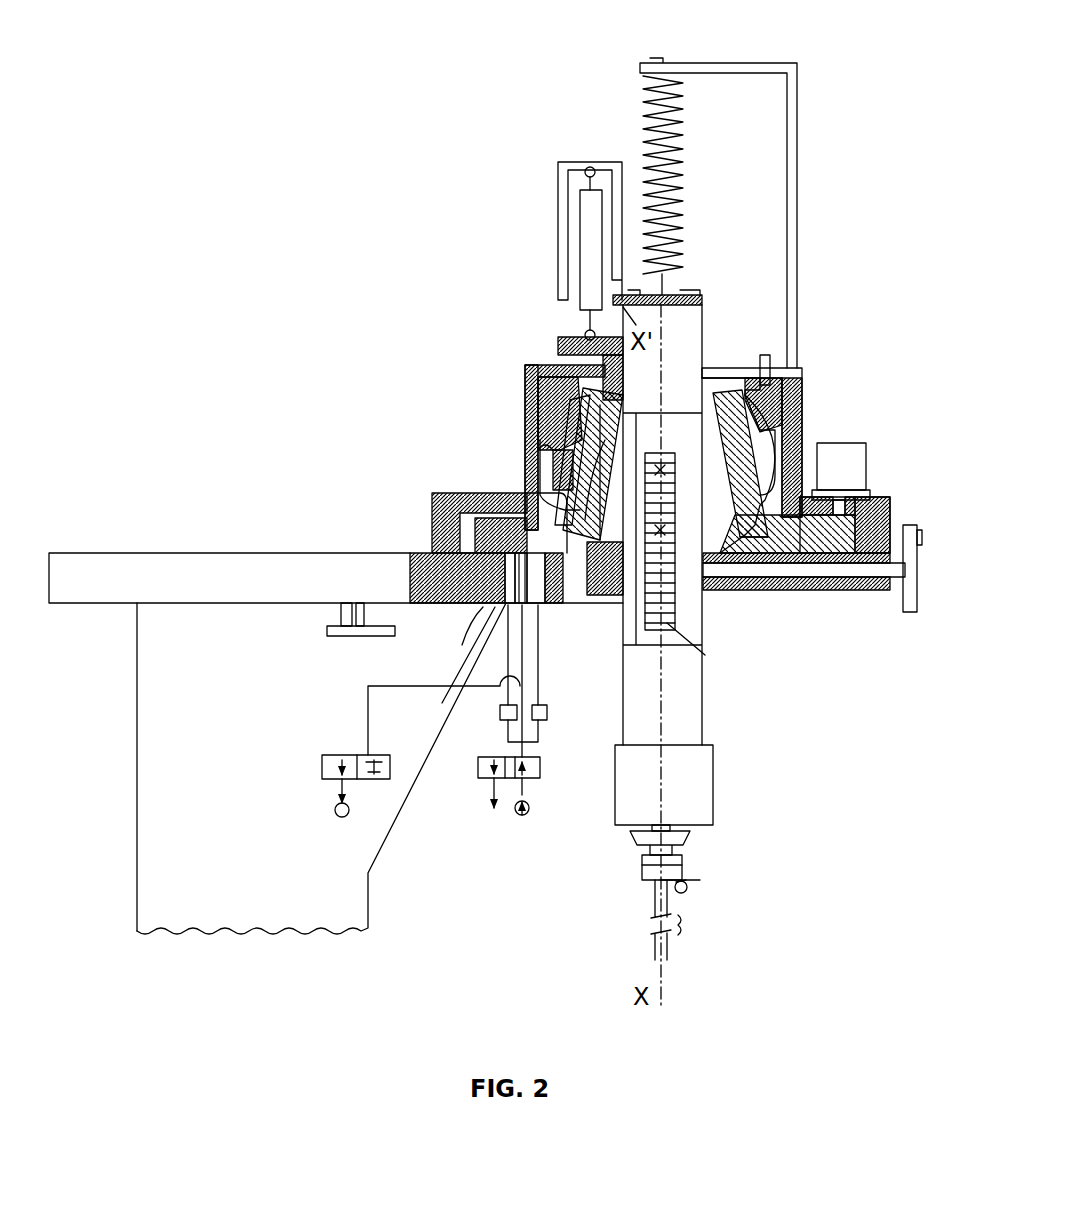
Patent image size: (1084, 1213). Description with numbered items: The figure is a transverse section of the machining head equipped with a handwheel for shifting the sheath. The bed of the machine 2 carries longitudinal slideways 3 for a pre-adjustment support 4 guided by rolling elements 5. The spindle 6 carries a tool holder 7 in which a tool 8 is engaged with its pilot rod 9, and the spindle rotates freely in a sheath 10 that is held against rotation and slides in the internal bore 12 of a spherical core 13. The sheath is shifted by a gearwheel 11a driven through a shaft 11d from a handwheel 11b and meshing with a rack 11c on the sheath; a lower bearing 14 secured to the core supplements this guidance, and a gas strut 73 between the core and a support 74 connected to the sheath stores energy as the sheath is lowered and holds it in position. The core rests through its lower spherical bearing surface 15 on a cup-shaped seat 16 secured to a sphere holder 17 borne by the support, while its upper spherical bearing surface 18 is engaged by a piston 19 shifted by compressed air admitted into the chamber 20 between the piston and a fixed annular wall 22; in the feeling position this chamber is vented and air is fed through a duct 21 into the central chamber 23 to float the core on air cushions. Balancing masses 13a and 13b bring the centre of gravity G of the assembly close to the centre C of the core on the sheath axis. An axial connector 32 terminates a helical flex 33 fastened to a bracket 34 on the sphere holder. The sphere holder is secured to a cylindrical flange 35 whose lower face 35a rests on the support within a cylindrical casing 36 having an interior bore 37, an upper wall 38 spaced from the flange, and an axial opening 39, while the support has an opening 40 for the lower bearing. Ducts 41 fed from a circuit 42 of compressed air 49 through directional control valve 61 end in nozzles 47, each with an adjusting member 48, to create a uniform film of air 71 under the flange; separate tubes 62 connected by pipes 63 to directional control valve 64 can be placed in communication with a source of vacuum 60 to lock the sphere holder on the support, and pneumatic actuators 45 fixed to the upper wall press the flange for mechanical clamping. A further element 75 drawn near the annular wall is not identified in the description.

The bed of the machine 2 is at (160, 815).
The longitudinal slideways 3 is at (215, 605).
The pre-adjustment support 4 is at (112, 565).
The rolling elements 5 is at (375, 625).
The spindle 6 is at (665, 823).
The tool holder 7 is at (680, 842).
The tool 8 is at (687, 890).
The pilot rod 9 is at (655, 945).
The sheath 10 is at (690, 720).
The gearwheel 11a is at (700, 590).
The handwheel 11b is at (912, 600).
The rack 11c is at (690, 632).
The shaft 11d is at (825, 575).
The internal bore 12 is at (638, 630).
The spherical core 13 is at (753, 437).
The balancing mass 13a is at (565, 340).
The balancing mass 13b is at (583, 510).
The lower bearing 14 is at (605, 600).
The lower spherical bearing surface 15 is at (738, 540).
The seat 16 is at (627, 520).
The sphere holder 17 is at (522, 419).
The upper spherical bearing surface 18 is at (775, 400).
The piston 19 is at (552, 407).
The chamber 20 is at (540, 383).
The duct 21 is at (545, 452).
The fixed annular wall 22 is at (752, 368).
The central chamber 23 is at (553, 467).
The axial connector 32 is at (675, 290).
The flex 33 is at (680, 175).
The bracket 34 is at (708, 62).
The cylindrical flange 35 is at (880, 520).
The lower face of the flange 35a is at (775, 555).
The cylindrical casing 36 is at (865, 497).
The interior bore 37 is at (475, 532).
The upper wall of the casing 38 is at (440, 497).
The axial opening 39 is at (525, 495).
The opening 40 is at (567, 592).
The ducts 41 is at (459, 665).
The pressurized gas circuit 42 is at (540, 690).
The pneumatic actuators 45 is at (850, 450).
The nozzles 47 is at (465, 645).
The delivery adjusting member 48 is at (547, 712).
The compressed air supply 49 is at (530, 805).
The source of vacuum 60 is at (337, 815).
The directional control valve 61 is at (540, 768).
The tubes 62 is at (420, 565).
The pipes 63 is at (368, 688).
The directional control valve 64 is at (322, 768).
The film of air 71 is at (747, 538).
The gas strut 73 is at (590, 215).
The support 74 is at (575, 165).
The bolt 75 is at (790, 362).
The centre of the spherical core C is at (660, 470).
The centre of gravity G is at (665, 530).